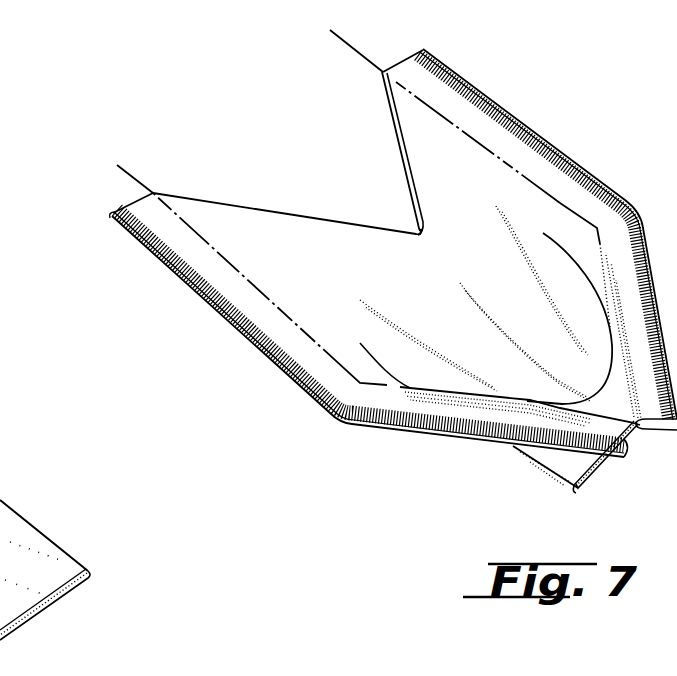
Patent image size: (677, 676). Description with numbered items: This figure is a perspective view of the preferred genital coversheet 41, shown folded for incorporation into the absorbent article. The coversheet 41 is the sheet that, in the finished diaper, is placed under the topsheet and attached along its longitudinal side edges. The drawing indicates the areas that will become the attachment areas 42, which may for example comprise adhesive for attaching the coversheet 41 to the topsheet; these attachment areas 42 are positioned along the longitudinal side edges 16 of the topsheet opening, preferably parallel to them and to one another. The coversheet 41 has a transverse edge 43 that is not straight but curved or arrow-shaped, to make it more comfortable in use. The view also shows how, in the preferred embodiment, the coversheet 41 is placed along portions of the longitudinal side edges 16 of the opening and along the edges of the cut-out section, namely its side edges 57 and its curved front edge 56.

The longitudinal side edges of the opening 16 is at (351, 47).
The genital coversheet 41 is at (407, 357).
The attachment areas 42 is at (113, 213).
The transverse edge 43 is at (411, 184).
The curved front edge 56 is at (532, 400).
The side edges 57 is at (560, 203).